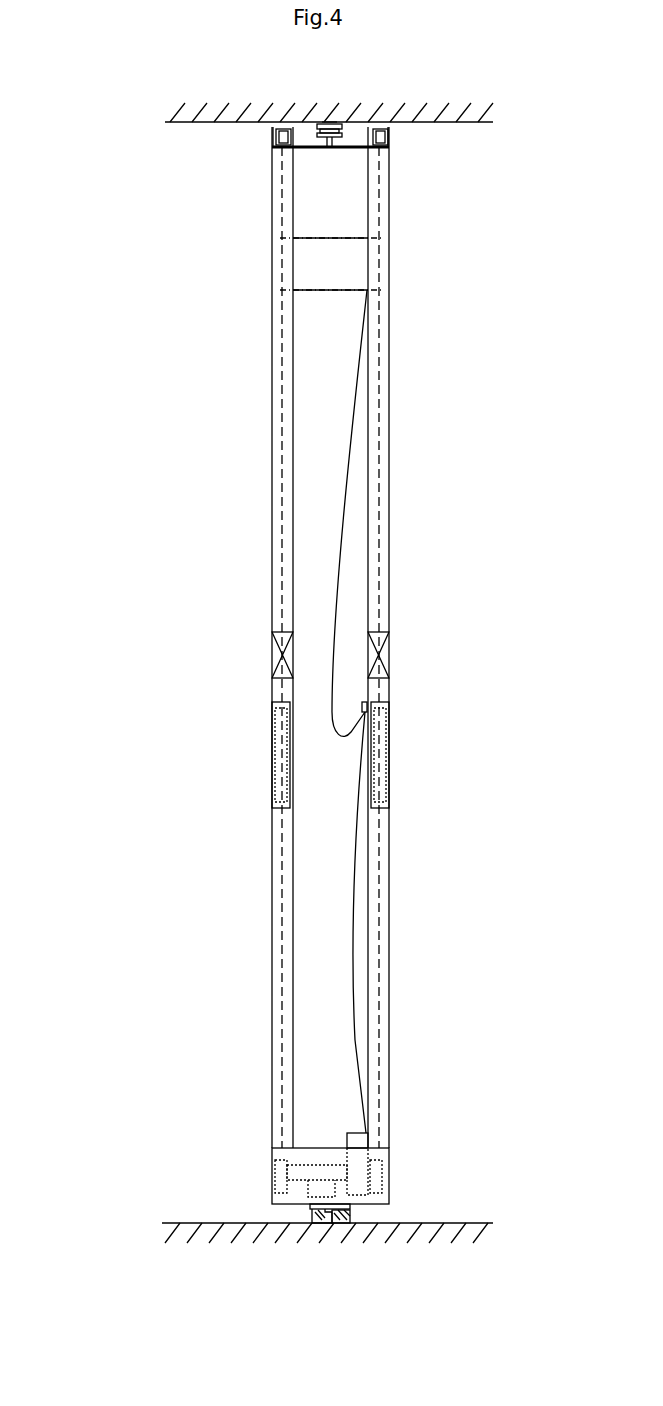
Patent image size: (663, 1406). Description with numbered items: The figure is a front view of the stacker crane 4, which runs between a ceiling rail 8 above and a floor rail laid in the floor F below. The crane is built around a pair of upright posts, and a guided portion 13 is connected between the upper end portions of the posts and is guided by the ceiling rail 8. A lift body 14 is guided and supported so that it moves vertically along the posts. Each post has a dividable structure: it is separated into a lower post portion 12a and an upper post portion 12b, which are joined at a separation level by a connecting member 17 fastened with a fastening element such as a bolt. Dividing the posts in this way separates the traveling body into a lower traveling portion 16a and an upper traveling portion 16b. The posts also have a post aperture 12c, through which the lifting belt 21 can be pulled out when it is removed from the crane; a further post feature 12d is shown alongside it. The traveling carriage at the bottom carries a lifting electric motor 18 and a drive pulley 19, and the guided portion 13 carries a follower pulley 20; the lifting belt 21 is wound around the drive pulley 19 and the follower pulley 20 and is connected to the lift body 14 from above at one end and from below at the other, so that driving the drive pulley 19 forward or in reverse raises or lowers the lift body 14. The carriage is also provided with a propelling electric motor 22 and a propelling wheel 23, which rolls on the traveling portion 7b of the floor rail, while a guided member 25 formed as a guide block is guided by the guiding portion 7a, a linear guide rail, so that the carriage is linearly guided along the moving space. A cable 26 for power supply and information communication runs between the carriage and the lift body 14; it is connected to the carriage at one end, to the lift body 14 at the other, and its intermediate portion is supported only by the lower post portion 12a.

The stacker crane 4 is at (128, 358).
The ceiling rail 8 is at (322, 122).
The guided portion 13 is at (315, 150).
The lift body 14 is at (340, 238).
The follower pulley 20 is at (273, 140).
The upper post portion 12b is at (273, 248).
The lower post portion 12a is at (273, 945).
The post aperture 12c is at (279, 755).
The guide housing 12d is at (274, 808).
The upper traveling portion 16b is at (302, 379).
The lower traveling portion 16a is at (344, 913).
The connecting member 17 is at (273, 648).
The lifting belt 21 is at (280, 452).
The cable 26 is at (345, 405).
The lifting electric motor 18 is at (357, 1133).
The propelling electric motor 22 is at (320, 1165).
The drive pulley 19 is at (270, 1175).
The propelling wheel 23 is at (350, 1206).
The guided member 25 is at (312, 1210).
The guiding portion 7a is at (322, 1223).
The traveling portion 7b is at (350, 1218).
The floor F is at (192, 1222).